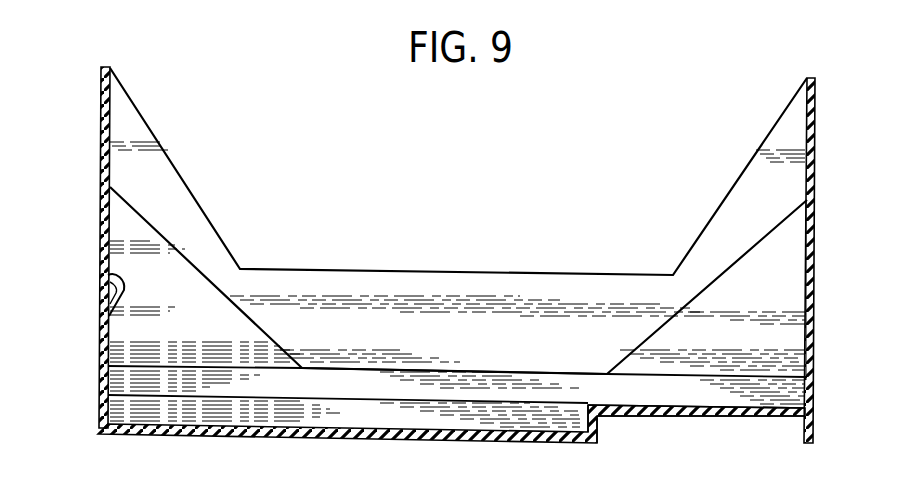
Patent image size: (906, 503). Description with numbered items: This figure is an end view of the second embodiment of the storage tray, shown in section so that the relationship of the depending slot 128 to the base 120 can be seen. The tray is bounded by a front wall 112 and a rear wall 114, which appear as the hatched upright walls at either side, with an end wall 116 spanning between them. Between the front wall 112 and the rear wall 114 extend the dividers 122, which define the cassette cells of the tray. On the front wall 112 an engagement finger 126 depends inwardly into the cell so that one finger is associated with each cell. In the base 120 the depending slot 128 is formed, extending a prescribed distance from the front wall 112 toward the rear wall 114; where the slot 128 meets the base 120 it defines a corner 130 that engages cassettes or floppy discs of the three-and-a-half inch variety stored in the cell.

The front wall 112 is at (102, 186).
The rear wall 114 is at (814, 228).
The end wall 116 is at (777, 144).
The base 120 is at (710, 416).
The divider 122 is at (810, 311).
The engagement finger 126 is at (108, 284).
The depending slot 128 is at (457, 424).
The corner 130 is at (580, 404).